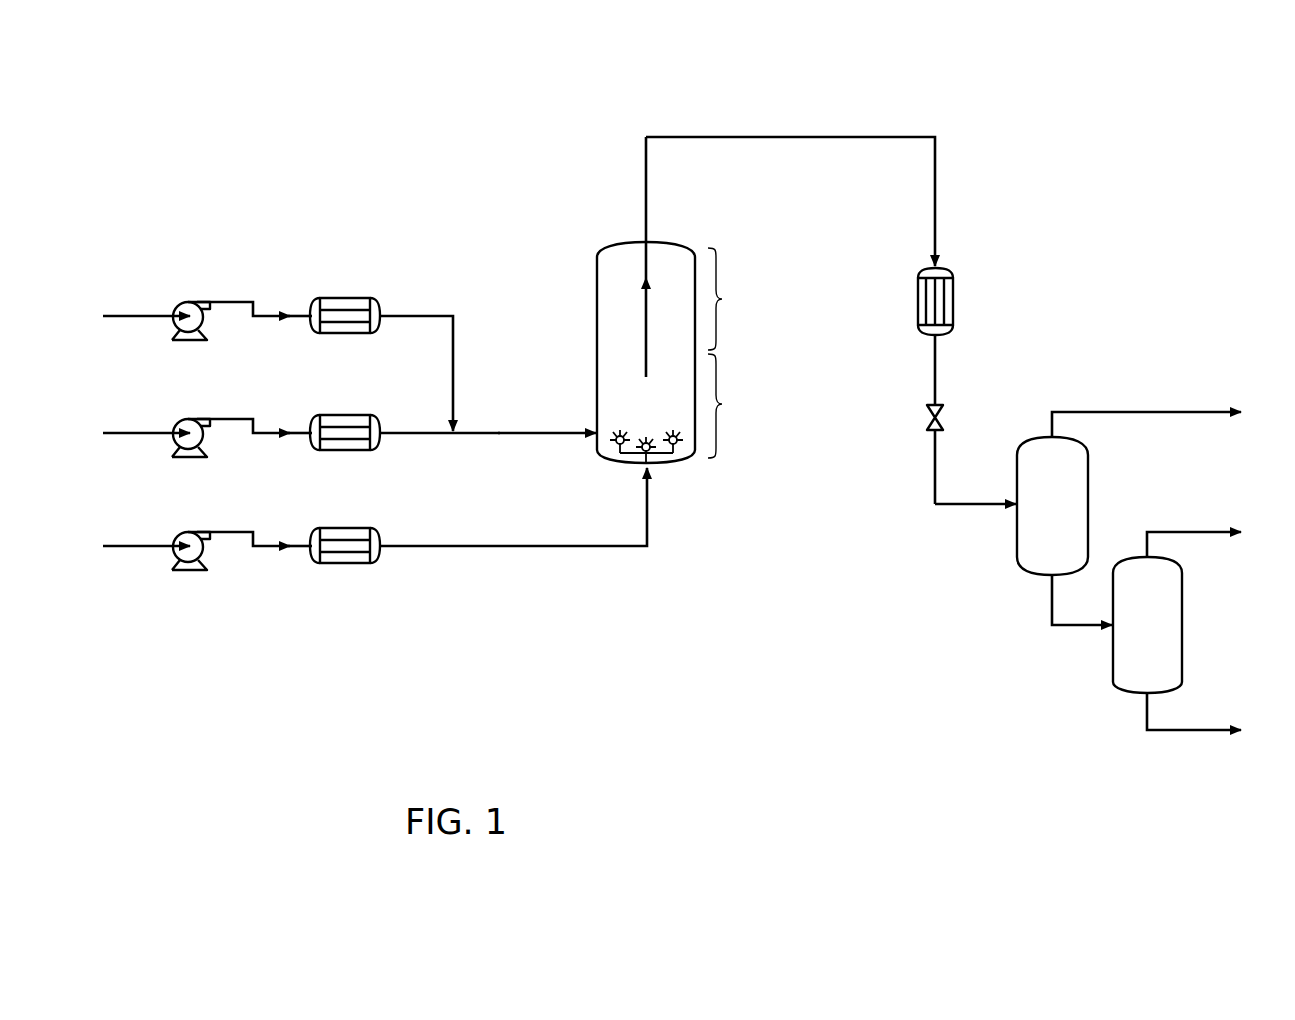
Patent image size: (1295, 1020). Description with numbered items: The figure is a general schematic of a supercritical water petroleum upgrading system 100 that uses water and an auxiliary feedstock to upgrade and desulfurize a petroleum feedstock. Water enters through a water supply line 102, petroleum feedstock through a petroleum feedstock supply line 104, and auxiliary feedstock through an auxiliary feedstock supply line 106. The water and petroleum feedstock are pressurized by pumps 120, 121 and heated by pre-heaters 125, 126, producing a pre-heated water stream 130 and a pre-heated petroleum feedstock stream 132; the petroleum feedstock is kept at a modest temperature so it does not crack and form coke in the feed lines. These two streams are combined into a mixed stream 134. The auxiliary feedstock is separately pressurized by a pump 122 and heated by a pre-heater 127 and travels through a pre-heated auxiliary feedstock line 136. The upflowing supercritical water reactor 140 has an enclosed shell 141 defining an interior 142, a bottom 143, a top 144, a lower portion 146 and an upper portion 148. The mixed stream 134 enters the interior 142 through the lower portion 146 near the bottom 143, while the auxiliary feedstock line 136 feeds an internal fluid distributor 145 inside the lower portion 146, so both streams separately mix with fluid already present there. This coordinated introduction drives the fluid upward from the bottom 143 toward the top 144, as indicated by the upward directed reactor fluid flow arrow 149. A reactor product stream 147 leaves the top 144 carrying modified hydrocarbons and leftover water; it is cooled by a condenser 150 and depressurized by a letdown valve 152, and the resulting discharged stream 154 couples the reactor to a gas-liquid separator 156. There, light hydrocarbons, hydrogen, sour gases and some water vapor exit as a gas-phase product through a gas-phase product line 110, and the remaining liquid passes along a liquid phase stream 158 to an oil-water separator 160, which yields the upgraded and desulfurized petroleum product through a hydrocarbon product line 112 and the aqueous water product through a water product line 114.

The supercritical water petroleum upgrading system 100 is at (226, 138).
The water supply line 102 is at (163, 315).
The petroleum feedstock supply line 104 is at (163, 432).
The auxiliary feedstock supply line 106 is at (163, 545).
The gas-phase product line 110 is at (1180, 412).
The hydrocarbon product line 112 is at (1180, 532).
The water product line 114 is at (1180, 730).
The pump 120 is at (198, 302).
The pump 121 is at (198, 419).
The pump 122 is at (198, 532).
The pre-heater 125 is at (345, 298).
The pre-heater 126 is at (346, 415).
The pre-heater 127 is at (346, 528).
The pre-heated water stream 130 is at (398, 316).
The pre-heated petroleum feedstock stream 132 is at (418, 435).
The mixed stream 134 is at (500, 433).
The pre-heated auxiliary feedstock line 136 is at (474, 547).
The upflowing supercritical water reactor 140 is at (655, 321).
The enclosed shell 141 is at (597, 303).
The interior 142 is at (648, 405).
The bottom 143 is at (680, 458).
The top 144 is at (620, 244).
The internal fluid distributor 145 is at (631, 456).
The lower portion 146 is at (718, 404).
The reactor product stream 147 is at (786, 137).
The upper portion 148 is at (718, 298).
The upward directed reactor fluid flow arrow 149 is at (645, 345).
The condenser 150 is at (954, 297).
The letdown valve 152 is at (926, 418).
The discharged stream 154 is at (968, 505).
The gas-liquid separator 156 is at (1052, 506).
The liquid phase stream 158 is at (1082, 627).
The oil-water separator 160 is at (1147, 625).